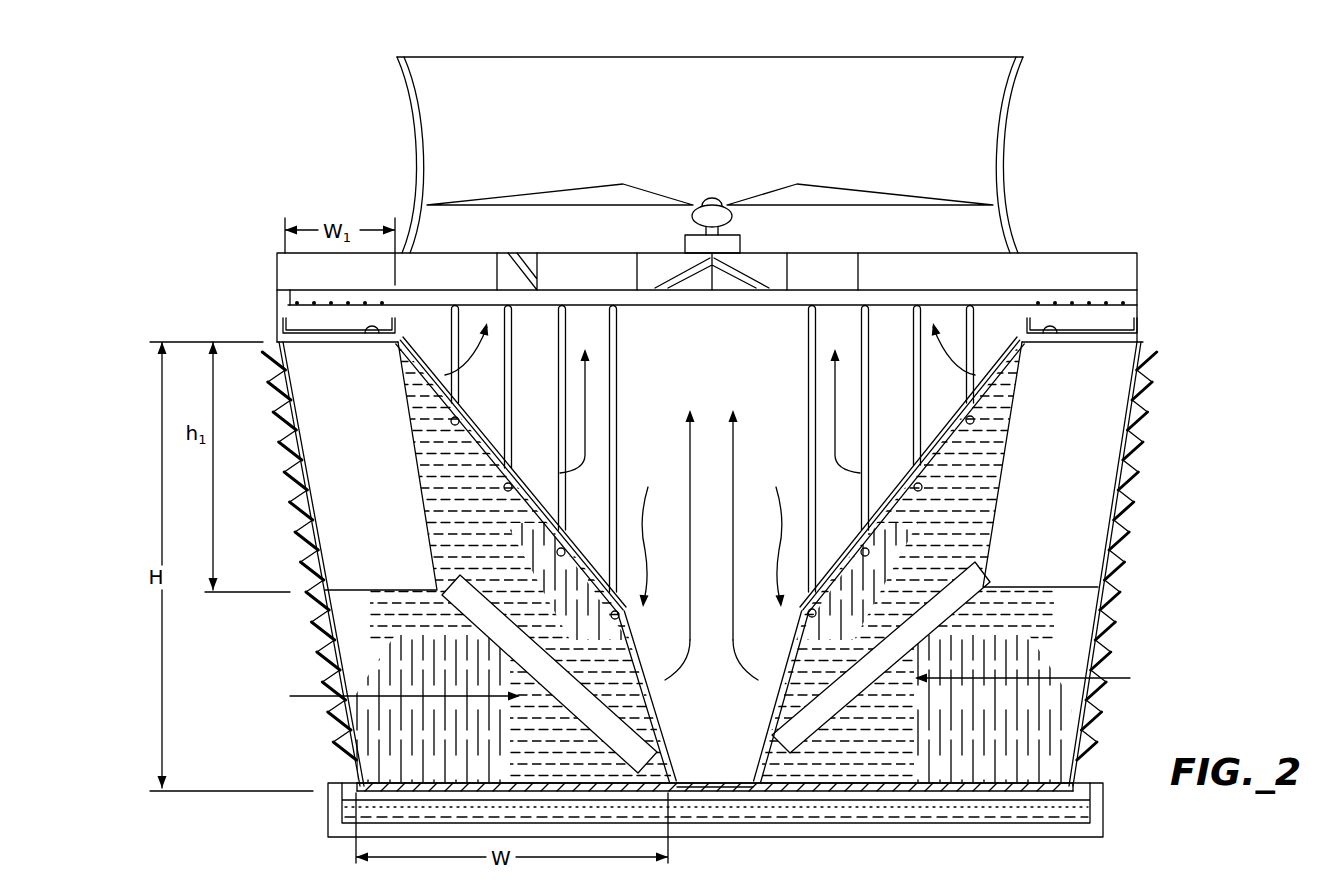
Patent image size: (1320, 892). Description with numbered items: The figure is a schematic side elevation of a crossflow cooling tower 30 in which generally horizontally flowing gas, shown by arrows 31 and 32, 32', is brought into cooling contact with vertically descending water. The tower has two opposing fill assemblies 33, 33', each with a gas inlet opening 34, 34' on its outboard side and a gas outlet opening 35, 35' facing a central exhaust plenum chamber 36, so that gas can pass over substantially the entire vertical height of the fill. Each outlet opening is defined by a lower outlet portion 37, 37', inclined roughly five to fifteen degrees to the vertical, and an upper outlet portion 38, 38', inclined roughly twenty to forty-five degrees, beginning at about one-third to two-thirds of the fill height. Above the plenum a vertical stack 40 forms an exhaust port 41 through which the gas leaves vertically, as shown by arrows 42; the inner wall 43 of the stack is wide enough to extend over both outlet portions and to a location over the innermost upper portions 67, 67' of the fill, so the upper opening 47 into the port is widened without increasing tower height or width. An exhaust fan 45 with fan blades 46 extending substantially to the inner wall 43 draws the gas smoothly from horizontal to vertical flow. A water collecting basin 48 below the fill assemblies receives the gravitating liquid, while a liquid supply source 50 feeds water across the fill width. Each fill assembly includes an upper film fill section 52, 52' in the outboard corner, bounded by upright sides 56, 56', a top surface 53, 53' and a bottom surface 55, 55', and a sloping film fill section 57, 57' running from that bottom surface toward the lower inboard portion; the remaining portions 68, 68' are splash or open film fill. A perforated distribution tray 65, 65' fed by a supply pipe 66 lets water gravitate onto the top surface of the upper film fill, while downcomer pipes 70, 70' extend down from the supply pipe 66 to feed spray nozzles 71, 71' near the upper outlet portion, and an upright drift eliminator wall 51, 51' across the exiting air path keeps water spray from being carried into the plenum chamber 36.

The crossflow cooling tower 30 is at (1130, 168).
The horizontal gas flow arrow 31 is at (1060, 510).
The horizontal gas flow arrow 32 is at (405, 678).
The horizontal gas flow arrow 32' is at (1022, 655).
The fill assembly 33 is at (446, 652).
The fill assembly 33' is at (934, 694).
The gas inlet opening 34 is at (629, 637).
The gas inlet opening 34' is at (809, 579).
The gas outlet opening 35 is at (612, 537).
The gas outlet opening 35' is at (813, 537).
The exhaust plenum chamber 36 is at (701, 402).
The lower outlet portion 37 is at (687, 670).
The lower outlet portion 37' is at (744, 670).
The upper outlet portion 38 is at (510, 477).
The upper outlet portion 38' is at (914, 477).
The vertical stack 40 is at (1010, 160).
The exhaust port 41 is at (719, 155).
The vertical gas flow arrow 42 is at (838, 395).
The inner wall 43 is at (417, 137).
The exhaust fan 45 is at (713, 196).
The fan blade 46 is at (553, 187).
The upper opening 47 is at (728, 350).
The water collecting basin 48 is at (1105, 820).
The liquid supply source 50 is at (1102, 276).
The drift eliminator wall 51 is at (514, 472).
The drift eliminator wall 51' is at (908, 472).
The upper film fill section 52 is at (478, 564).
The upper film fill section 52' is at (954, 564).
The top surface 53 is at (302, 318).
The top surface 53' is at (1125, 313).
The bottom surface 55 is at (506, 562).
The bottom surface 55' is at (922, 562).
The upright sides 56 is at (304, 556).
The upright sides 56' is at (1138, 556).
The sloping film fill section 57 is at (549, 674).
The sloping film fill section 57' is at (881, 657).
The perforated distribution tray 65 is at (339, 347).
The perforated distribution tray 65' is at (1082, 348).
The supply pipe 66 is at (1032, 295).
The innermost upper portion 67 is at (361, 327).
The innermost upper portion 67' is at (1060, 326).
The remaining fill portions 68 is at (428, 591).
The remaining fill portions 68' is at (1000, 591).
The downcomer pipe 70 is at (561, 449).
The downcomer pipe 70' is at (856, 449).
The spray nozzle 71 is at (623, 572).
The spray nozzle 71' is at (809, 569).